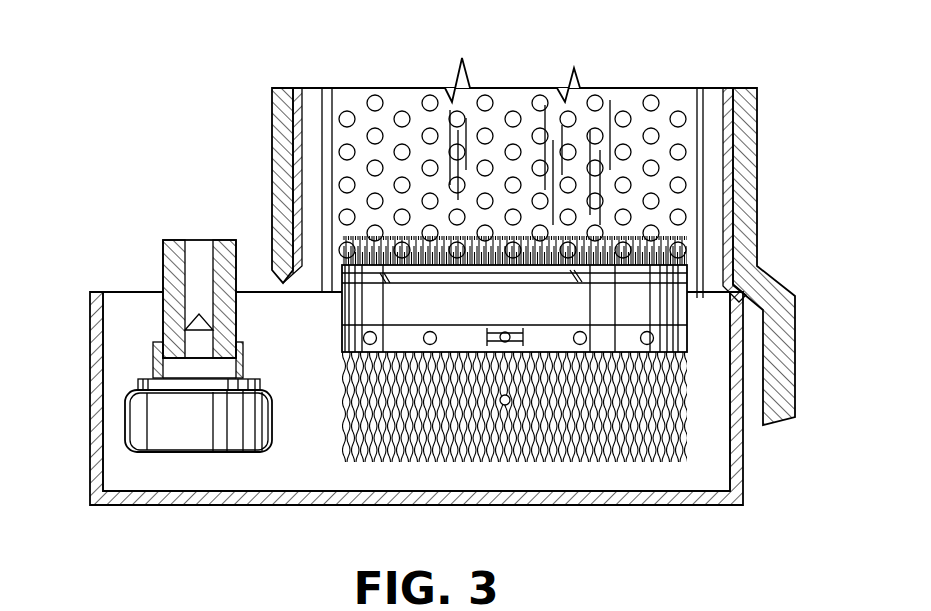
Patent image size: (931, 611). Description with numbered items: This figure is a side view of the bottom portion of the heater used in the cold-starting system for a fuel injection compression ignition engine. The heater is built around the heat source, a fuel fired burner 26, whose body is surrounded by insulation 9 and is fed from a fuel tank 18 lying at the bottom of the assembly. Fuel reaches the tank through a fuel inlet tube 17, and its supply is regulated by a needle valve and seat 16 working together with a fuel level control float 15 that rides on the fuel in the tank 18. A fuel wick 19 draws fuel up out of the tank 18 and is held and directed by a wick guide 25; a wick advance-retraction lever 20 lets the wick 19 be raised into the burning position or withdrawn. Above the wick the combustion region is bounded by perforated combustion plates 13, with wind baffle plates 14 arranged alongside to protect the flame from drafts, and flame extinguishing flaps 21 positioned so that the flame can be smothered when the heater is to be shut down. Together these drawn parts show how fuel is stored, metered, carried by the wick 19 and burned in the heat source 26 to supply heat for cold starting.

The insulation 9 is at (284, 114).
The perforated combustion plates 13 is at (666, 102).
The wind baffle plates 14 is at (300, 156).
The fuel level control float 15 is at (137, 428).
The needle valve and seat 16 is at (200, 338).
The fuel inlet tube 17 is at (197, 263).
The fuel tank 18 is at (217, 470).
The fuel wick 19 is at (499, 405).
The wick advance-retraction lever 20 is at (512, 347).
The flame extinguishing flaps 21 is at (668, 268).
The wick guide 25 is at (676, 312).
The heat source (fuel fired burner) 26 is at (264, 506).